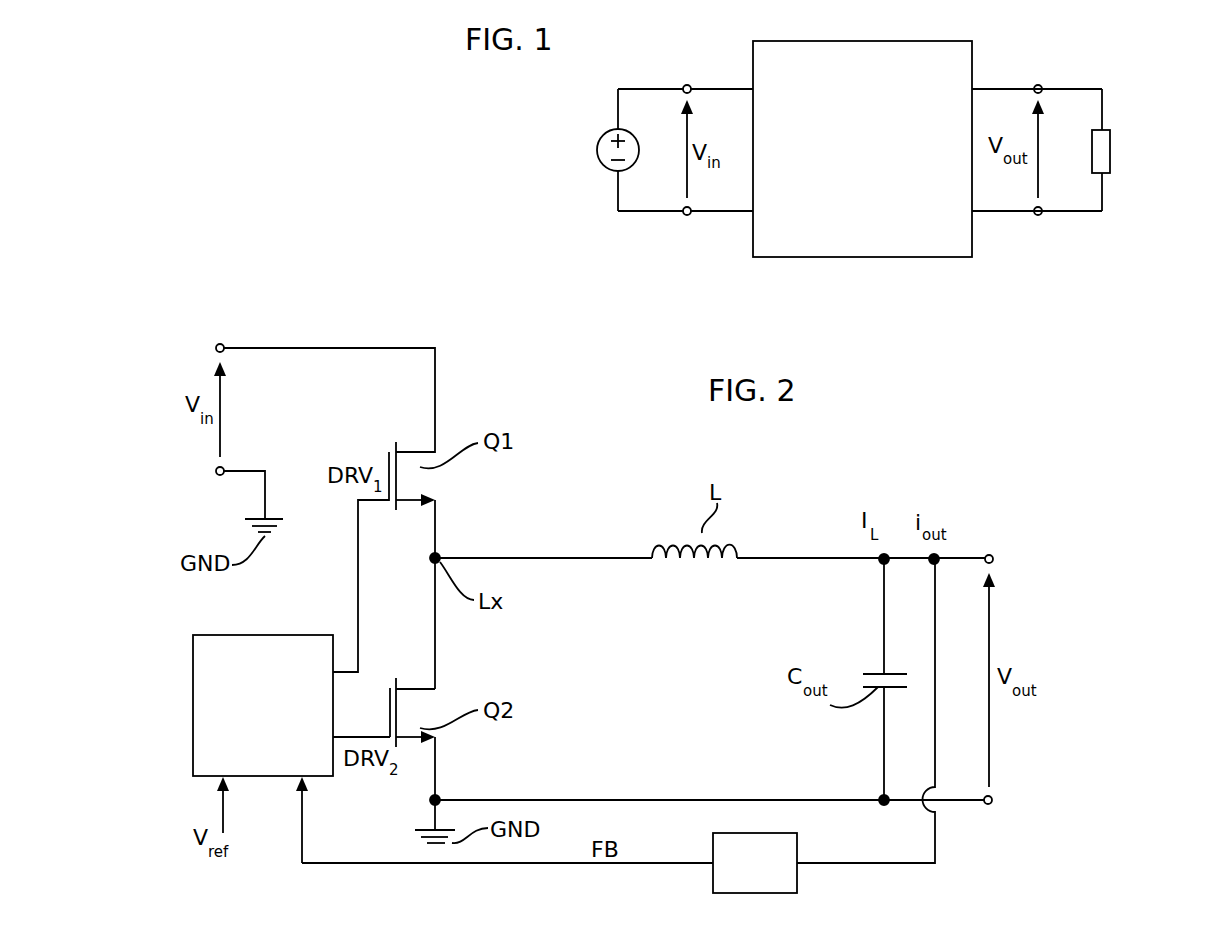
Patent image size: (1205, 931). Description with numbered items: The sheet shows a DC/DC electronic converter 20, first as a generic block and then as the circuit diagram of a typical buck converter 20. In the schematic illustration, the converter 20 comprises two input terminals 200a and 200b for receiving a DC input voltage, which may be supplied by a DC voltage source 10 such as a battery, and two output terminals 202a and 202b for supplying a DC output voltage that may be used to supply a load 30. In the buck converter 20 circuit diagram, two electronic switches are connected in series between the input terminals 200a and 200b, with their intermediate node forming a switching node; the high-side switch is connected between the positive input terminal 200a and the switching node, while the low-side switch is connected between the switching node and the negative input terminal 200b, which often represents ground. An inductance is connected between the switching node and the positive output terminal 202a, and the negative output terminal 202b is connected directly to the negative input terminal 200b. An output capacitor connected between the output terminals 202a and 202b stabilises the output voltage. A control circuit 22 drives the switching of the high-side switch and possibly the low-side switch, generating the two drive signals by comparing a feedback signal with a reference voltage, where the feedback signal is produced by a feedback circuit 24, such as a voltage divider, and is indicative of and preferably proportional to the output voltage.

In FIG. 1, the DC voltage source 10 is at (597, 150).
In FIG. 1, the electronic converter 20 is at (857, 240).
In FIG. 2, the electronic converter 20 is at (832, 466).
In FIG. 2, the control circuit 22 is at (213, 700).
In FIG. 2, the feedback circuit 24 is at (722, 880).
In FIG. 1, the load 30 is at (1110, 150).
In FIG. 1, the input terminal 200a is at (687, 84).
In FIG. 2, the input terminal 200a is at (217, 345).
In FIG. 1, the input terminal 200b is at (687, 216).
In FIG. 2, the input terminal 200b is at (216, 476).
In FIG. 1, the output terminal 202a is at (1038, 84).
In FIG. 2, the output terminal 202a is at (993, 553).
In FIG. 1, the output terminal 202b is at (1038, 216).
In FIG. 2, the output terminal 202b is at (992, 805).